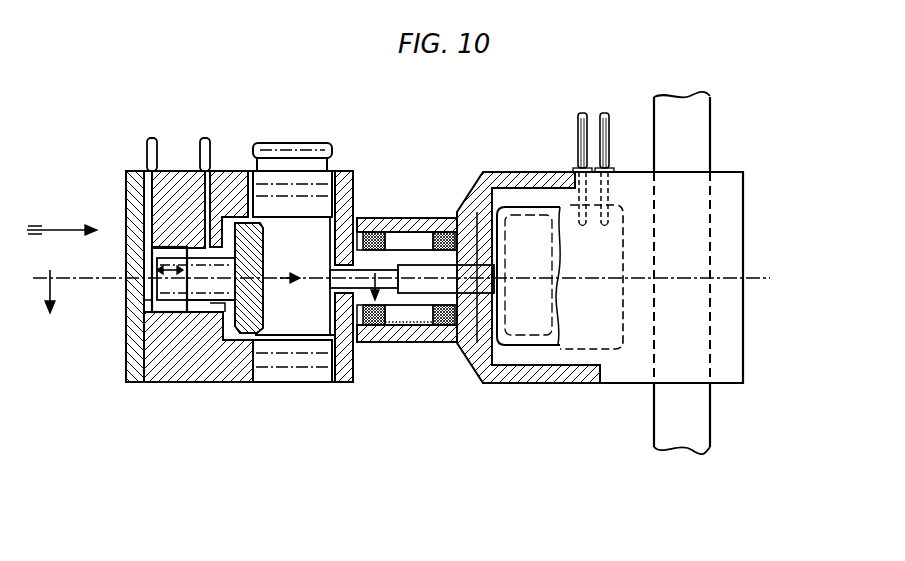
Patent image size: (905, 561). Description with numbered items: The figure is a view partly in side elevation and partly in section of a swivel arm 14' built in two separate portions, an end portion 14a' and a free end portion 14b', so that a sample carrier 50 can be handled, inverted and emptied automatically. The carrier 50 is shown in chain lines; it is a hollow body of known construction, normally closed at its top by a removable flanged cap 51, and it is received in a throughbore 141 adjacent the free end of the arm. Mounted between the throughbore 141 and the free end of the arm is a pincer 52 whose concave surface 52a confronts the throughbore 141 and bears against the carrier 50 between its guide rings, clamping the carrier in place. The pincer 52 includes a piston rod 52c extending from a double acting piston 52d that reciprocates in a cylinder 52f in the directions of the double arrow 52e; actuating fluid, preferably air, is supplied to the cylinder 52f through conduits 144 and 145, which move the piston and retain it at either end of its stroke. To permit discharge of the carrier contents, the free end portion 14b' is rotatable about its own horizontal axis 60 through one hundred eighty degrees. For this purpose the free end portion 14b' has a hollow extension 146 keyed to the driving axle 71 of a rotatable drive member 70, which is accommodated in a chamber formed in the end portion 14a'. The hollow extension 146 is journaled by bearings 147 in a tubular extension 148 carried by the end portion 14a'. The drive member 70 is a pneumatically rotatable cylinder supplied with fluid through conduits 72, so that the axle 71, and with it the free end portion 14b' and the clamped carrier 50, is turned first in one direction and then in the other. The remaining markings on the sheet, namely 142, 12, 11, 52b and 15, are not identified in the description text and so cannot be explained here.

The coil 142 is at (176, 183).
The conduit 145 is at (222, 173).
The removable flanged cap 51 is at (271, 148).
The sample carrier 50 is at (300, 182).
The throughbore 141 is at (318, 180).
The conduit 144 is at (150, 200).
The flow direction 12 is at (60, 219).
The double arrow 52e is at (150, 272).
The double acting piston 52d is at (163, 288).
The cylinder 52f is at (147, 305).
The section line 11 is at (208, 306).
The free end portion 14b' is at (226, 315).
The piston rod 52c is at (203, 290).
The pincer 52 is at (263, 253).
The concave surface 52a is at (255, 312).
The direction of movement 52b is at (278, 278).
The bearings 147 is at (389, 226).
The tubular extension 148 is at (422, 244).
The horizontal axis 60 is at (462, 262).
The swivel arm 14' is at (528, 252).
The conduits 72 is at (603, 130).
The pipe 15 is at (702, 138).
The end portion 14a' is at (680, 261).
The hollow extension 146 is at (395, 318).
The driving axle 71 is at (425, 337).
The rotatable drive member 70 is at (535, 350).